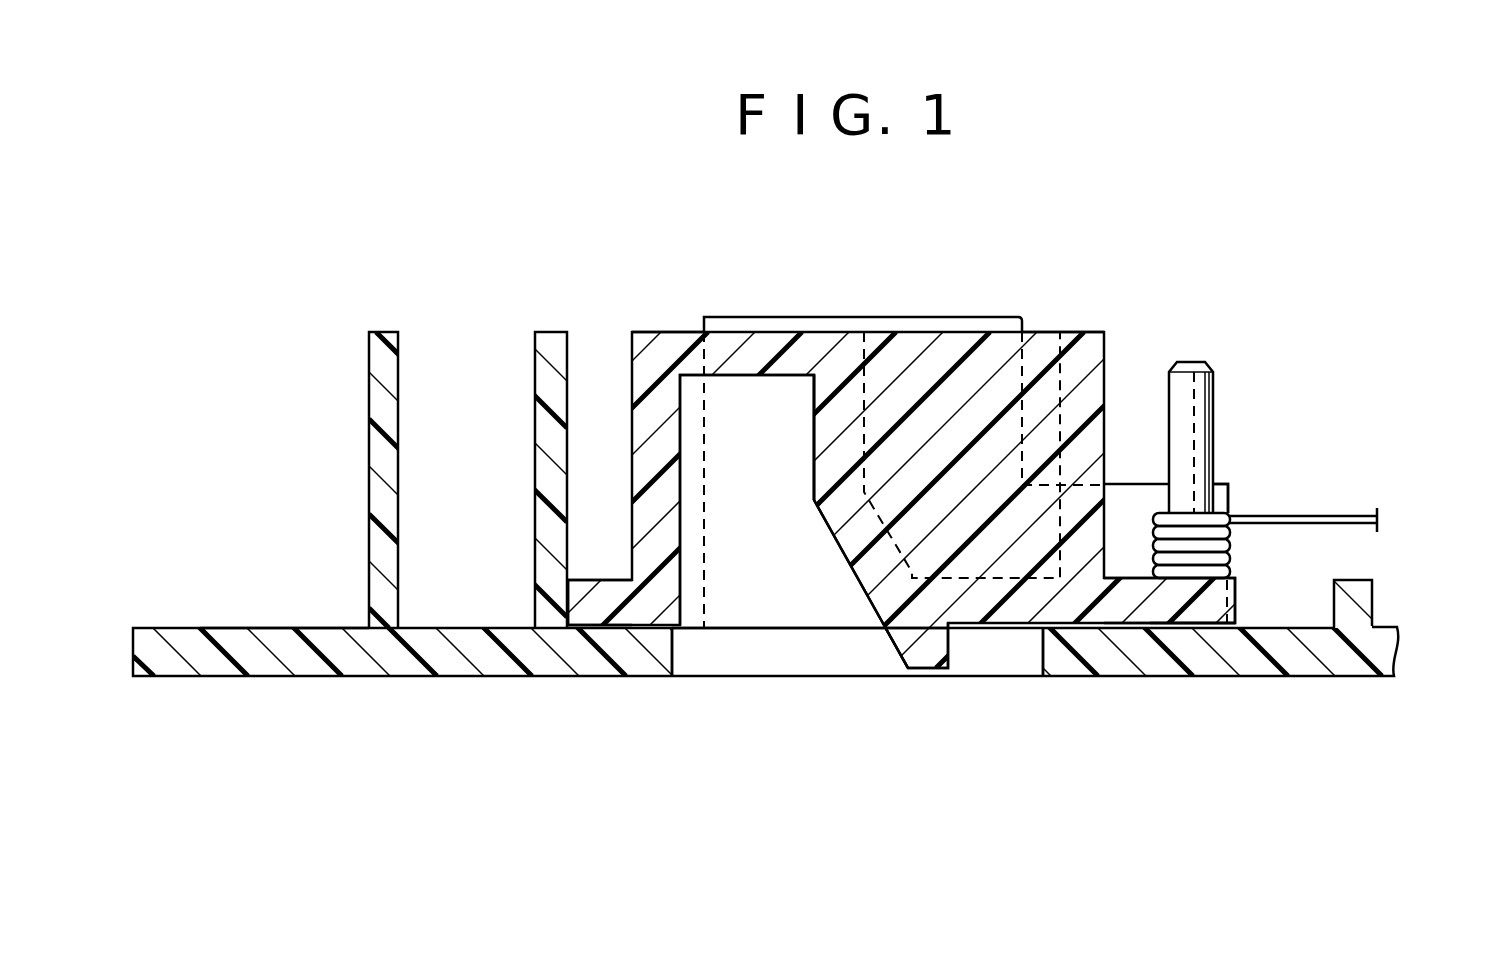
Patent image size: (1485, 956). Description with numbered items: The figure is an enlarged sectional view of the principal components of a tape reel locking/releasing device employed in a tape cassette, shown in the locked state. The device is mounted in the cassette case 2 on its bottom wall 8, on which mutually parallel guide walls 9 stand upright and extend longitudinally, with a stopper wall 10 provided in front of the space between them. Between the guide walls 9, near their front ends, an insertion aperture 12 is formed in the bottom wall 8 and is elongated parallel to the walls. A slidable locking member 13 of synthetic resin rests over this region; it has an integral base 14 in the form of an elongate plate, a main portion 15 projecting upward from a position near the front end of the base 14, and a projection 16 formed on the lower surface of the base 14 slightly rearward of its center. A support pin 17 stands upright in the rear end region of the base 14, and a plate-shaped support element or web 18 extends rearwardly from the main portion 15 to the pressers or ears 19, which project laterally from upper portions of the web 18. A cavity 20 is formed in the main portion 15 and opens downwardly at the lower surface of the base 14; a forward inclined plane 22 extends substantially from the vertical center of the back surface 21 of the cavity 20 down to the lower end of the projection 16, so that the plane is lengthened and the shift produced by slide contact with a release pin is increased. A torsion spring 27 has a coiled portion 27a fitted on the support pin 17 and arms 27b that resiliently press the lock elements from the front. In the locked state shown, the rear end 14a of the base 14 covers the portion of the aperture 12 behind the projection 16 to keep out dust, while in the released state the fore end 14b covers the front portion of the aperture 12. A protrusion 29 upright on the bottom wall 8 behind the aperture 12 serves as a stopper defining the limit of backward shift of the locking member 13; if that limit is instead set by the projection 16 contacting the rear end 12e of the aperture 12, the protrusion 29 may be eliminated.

The cassette case 2 is at (226, 678).
The bottom wall 8 is at (283, 626).
The guide wall 9 is at (946, 318).
The stopper wall 10 is at (575, 364).
The insertion aperture 12 is at (672, 660).
The rear end of the aperture 12e is at (1038, 654).
The slidable locking member 13 is at (651, 332).
The base 14 is at (1238, 592).
The rear end of the base 14a is at (1205, 616).
The fore end of the base 14b is at (592, 612).
The main portion 15 is at (685, 335).
The projection 16 is at (925, 662).
The support pin 17 is at (1210, 380).
The support element or web 18 is at (1004, 340).
The presser or ear 19 is at (1058, 386).
The cavity 20 is at (777, 395).
The back surface of the cavity 21 is at (813, 420).
The forward inclined plane 22 is at (862, 590).
The torsion spring 27 is at (1193, 515).
The coiled portion 27a is at (1216, 545).
The arm 27b is at (1350, 514).
The protrusion 29 is at (1362, 594).